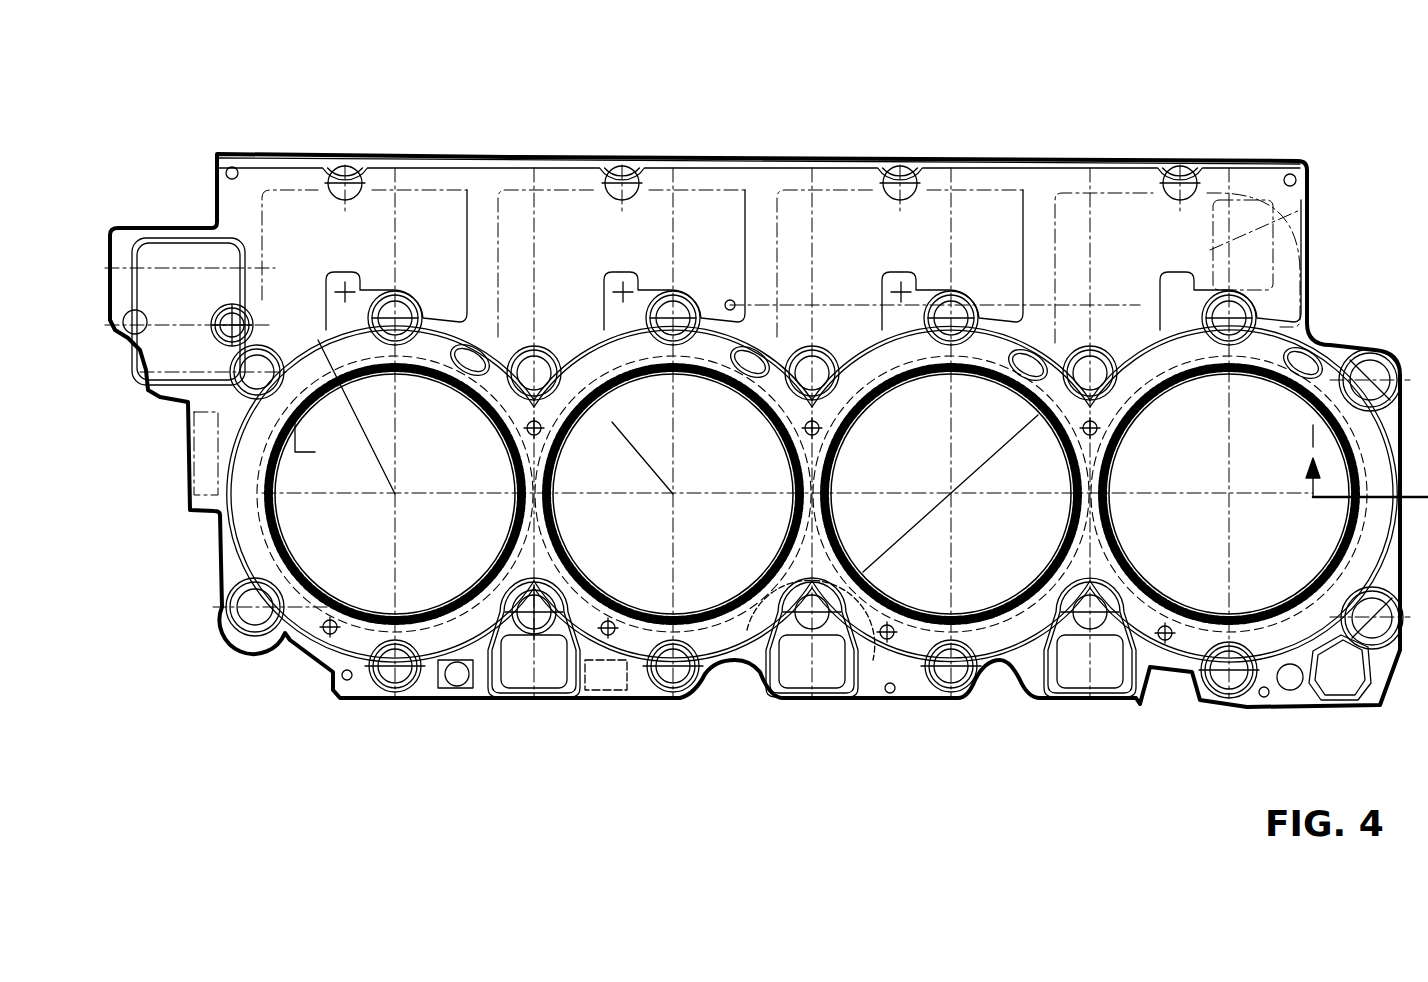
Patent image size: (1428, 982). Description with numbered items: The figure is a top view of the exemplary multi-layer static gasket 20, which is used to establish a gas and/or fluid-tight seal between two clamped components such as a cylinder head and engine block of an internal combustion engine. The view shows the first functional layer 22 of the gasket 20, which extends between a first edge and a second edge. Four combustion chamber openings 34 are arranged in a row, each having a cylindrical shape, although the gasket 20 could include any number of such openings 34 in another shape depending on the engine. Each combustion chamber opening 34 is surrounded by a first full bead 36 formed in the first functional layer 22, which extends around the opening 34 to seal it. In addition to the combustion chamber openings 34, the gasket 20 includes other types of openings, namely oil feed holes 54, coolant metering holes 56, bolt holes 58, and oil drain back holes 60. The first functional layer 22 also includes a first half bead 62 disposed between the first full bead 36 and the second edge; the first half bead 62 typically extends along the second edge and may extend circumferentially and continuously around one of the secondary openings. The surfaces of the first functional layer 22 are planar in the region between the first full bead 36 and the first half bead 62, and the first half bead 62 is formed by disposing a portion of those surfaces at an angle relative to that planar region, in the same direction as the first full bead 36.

The multi-layer static gasket 20 is at (766, 422).
The first functional layer 22 is at (1104, 148).
The combustion chamber opening 34 is at (450, 480).
The first full bead 36 is at (300, 597).
The oil feed hole 54 is at (226, 318).
The coolant metering hole 56 is at (537, 420).
The bolt hole 58 is at (531, 619).
The oil drain back hole 60 is at (544, 668).
The first half bead 62 is at (907, 655).